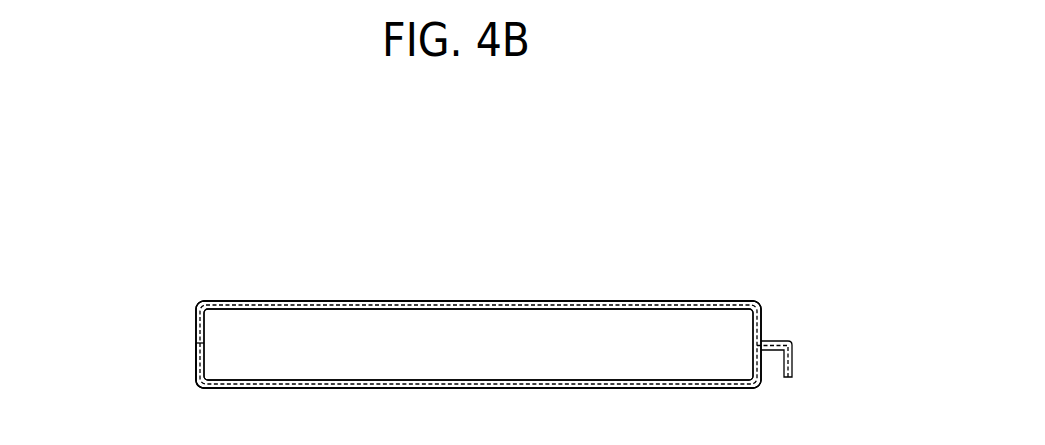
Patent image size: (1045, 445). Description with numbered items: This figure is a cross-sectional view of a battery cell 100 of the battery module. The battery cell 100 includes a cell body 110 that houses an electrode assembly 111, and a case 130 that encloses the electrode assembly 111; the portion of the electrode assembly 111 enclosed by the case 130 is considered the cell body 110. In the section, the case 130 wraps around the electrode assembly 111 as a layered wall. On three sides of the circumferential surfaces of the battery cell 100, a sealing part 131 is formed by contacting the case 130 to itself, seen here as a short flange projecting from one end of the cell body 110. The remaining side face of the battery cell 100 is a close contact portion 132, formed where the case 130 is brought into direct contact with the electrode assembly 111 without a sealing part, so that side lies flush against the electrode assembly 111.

The battery cell 100 is at (118, 169).
The cell body 110 is at (598, 301).
The electrode assembly 111 is at (495, 325).
The case 130 is at (293, 300).
The sealing part 131 is at (772, 340).
The close contact portion 132 is at (196, 326).